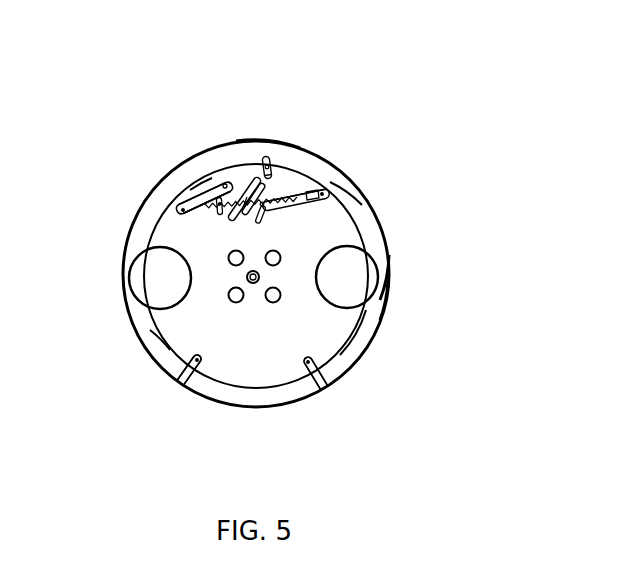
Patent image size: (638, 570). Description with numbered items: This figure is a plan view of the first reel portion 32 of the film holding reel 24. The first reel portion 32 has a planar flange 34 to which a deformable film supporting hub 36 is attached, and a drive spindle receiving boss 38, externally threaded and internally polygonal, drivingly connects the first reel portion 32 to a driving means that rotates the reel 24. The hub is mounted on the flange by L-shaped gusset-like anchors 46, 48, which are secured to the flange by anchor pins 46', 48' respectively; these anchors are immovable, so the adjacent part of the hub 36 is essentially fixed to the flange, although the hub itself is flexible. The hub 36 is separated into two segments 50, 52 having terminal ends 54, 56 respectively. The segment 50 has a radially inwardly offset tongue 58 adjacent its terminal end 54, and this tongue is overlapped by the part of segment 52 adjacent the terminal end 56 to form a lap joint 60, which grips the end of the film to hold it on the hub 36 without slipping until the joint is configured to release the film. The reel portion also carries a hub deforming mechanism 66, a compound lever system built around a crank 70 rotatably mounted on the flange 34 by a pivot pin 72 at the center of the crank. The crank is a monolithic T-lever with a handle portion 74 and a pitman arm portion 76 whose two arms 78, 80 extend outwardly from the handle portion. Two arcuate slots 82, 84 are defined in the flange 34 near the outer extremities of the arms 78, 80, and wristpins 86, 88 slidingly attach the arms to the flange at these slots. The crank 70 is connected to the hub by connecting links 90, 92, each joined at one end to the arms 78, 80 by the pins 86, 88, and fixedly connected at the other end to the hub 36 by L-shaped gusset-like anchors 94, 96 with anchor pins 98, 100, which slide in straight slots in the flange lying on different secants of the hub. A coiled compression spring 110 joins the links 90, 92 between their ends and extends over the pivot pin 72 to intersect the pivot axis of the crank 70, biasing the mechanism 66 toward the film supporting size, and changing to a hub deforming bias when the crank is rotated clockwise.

The film holding reel 24 is at (397, 255).
The first reel portion 32 is at (358, 176).
The planar flange 34 is at (377, 306).
The deformable film supporting hub 36 is at (357, 332).
The drive spindle receiving boss 38 is at (253, 284).
The L-shaped gusset-like anchor 46 is at (175, 402).
The anchor pin 46' is at (143, 397).
The L-shaped gusset-like anchor 48 is at (342, 397).
The anchor pin 48' is at (293, 406).
The hub segment 50 is at (160, 338).
The hub segment 52 is at (354, 223).
The terminal end 54 is at (274, 165).
The terminal end 56 is at (261, 163).
The tongue 58 is at (266, 163).
The lap joint 60 is at (270, 138).
The hub deforming mechanism 66 is at (200, 183).
The crank 70 is at (208, 242).
The pivot pin 72 is at (245, 211).
The handle portion 74 is at (277, 180).
The pitman arm portion 76 is at (224, 183).
The arm 78 is at (218, 208).
The arm 80 is at (284, 175).
The arcuate slot 82 is at (219, 211).
The arcuate slot 84 is at (268, 220).
The wristpin 86 is at (221, 182).
The wristpin 88 is at (264, 205).
The connecting link 90 is at (192, 220).
The connecting link 92 is at (334, 206).
The L-shaped gusset-like anchor 94 is at (186, 214).
The L-shaped gusset-like anchor 96 is at (334, 188).
The anchor pin 98 is at (182, 207).
The anchor pin 100 is at (332, 192).
The coiled compression spring 110 is at (320, 185).